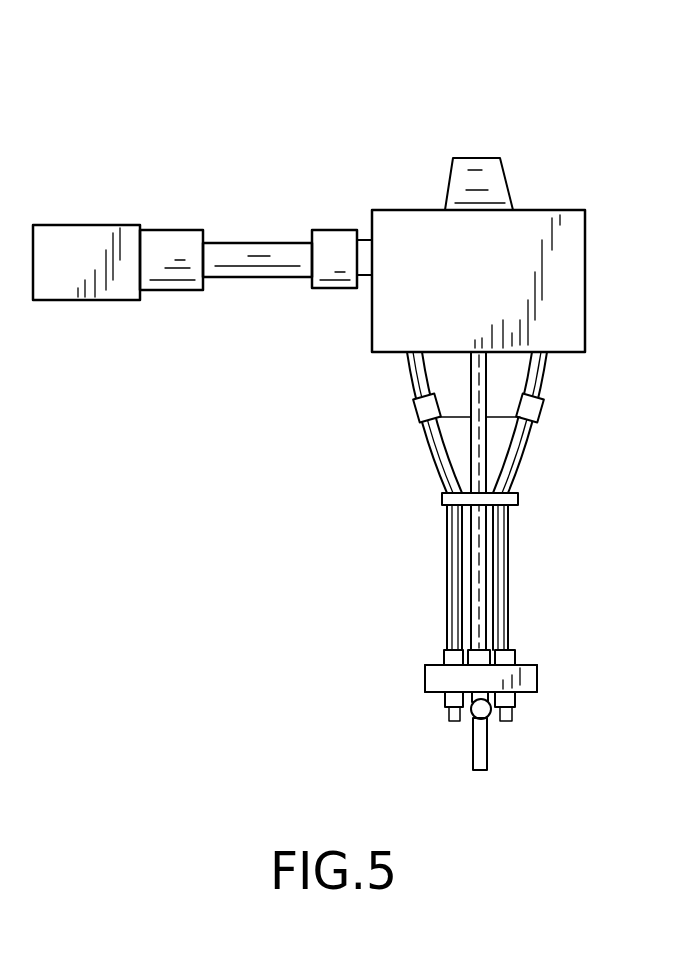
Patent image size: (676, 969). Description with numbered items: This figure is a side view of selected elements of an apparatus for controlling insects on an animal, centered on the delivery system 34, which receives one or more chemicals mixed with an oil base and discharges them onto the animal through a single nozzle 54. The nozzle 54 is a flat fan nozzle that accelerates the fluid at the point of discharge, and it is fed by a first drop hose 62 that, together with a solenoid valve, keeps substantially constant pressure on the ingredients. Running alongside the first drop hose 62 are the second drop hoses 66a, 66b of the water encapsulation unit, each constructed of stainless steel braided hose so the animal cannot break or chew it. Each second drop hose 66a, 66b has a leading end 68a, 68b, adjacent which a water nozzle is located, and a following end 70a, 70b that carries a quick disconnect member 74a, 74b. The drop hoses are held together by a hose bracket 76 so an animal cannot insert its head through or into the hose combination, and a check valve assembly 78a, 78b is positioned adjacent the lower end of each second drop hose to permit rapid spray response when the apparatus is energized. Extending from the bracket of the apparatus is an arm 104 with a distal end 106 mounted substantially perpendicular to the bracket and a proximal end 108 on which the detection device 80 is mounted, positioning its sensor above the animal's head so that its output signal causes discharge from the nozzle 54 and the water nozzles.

The delivery system 34 is at (370, 150).
The detection device 80 is at (90, 225).
The arm 104 is at (266, 243).
The distal end 106 is at (358, 240).
The proximal end 108 is at (204, 290).
The following end 70a is at (557, 358).
The following end 70b is at (405, 357).
The quick disconnect member 74a is at (542, 412).
The quick disconnect member 74b is at (415, 418).
The first drop hose 62 is at (490, 463).
The hose bracket 76 is at (442, 498).
The second drop hose 66a is at (513, 537).
The second drop hose 66b is at (447, 544).
The leading end 68a is at (515, 650).
The leading end 68b is at (447, 648).
The check valve assembly 78a is at (522, 700).
The check valve assembly 78b is at (432, 700).
The nozzle 54 is at (490, 752).